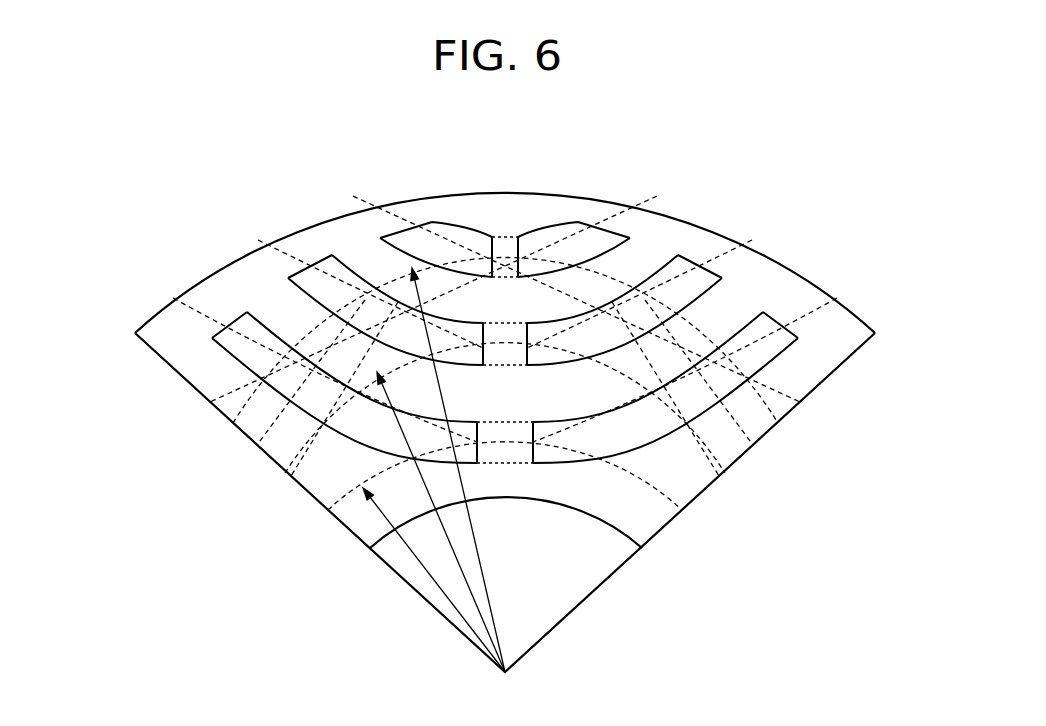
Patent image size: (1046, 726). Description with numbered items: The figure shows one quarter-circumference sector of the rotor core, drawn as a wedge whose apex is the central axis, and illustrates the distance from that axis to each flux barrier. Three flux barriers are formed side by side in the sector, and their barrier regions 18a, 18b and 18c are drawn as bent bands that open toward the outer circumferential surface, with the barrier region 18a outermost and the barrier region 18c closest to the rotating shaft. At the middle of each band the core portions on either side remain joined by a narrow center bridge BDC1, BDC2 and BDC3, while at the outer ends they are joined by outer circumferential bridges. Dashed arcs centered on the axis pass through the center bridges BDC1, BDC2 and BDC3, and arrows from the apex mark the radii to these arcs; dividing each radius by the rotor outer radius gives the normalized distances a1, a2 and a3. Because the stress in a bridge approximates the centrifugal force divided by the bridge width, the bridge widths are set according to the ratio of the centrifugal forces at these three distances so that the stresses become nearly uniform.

The barrier region 18a is at (550, 238).
The barrier region 18b is at (666, 272).
The barrier region 18c is at (760, 360).
The center bridge BDC1 is at (778, 423).
The center bridge BDC2 is at (725, 473).
The center bridge BDC3 is at (682, 510).